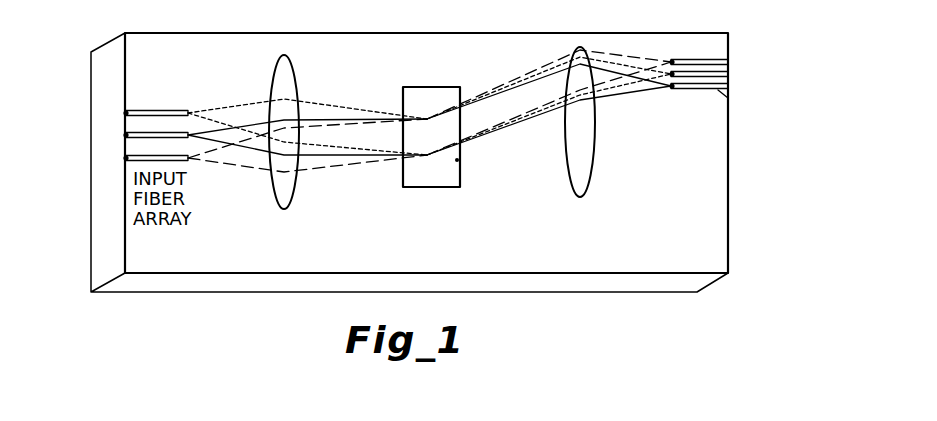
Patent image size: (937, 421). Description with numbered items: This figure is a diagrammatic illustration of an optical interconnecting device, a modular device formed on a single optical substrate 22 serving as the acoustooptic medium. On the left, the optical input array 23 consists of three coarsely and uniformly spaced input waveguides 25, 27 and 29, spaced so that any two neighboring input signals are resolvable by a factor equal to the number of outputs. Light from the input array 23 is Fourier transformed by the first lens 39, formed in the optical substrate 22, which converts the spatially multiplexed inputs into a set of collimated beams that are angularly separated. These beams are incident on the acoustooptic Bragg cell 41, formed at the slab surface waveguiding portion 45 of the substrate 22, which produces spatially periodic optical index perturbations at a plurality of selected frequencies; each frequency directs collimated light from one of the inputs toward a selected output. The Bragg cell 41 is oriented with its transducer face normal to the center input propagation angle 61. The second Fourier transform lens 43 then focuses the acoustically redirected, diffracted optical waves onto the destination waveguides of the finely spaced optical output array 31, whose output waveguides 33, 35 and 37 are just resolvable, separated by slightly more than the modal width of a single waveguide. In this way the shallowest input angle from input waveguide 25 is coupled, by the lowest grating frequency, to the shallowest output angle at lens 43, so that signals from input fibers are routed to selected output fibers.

The optical substrate 22 is at (215, 282).
The optical input array 23 is at (106, 152).
The input waveguide 25 is at (124, 150).
The input waveguide 27 is at (128, 136).
The input waveguide 29 is at (133, 111).
The optical output array 31 is at (712, 81).
The output waveguide 33 is at (729, 98).
The output waveguide 35 is at (729, 74).
The output waveguide 37 is at (716, 62).
The first lens 39 is at (298, 100).
The acoustooptic Bragg cell 41 is at (457, 160).
The second Fourier transform lens 43 is at (592, 166).
The slab surface waveguiding portion 45 is at (404, 87).
The center input propagation angle 61 is at (335, 155).